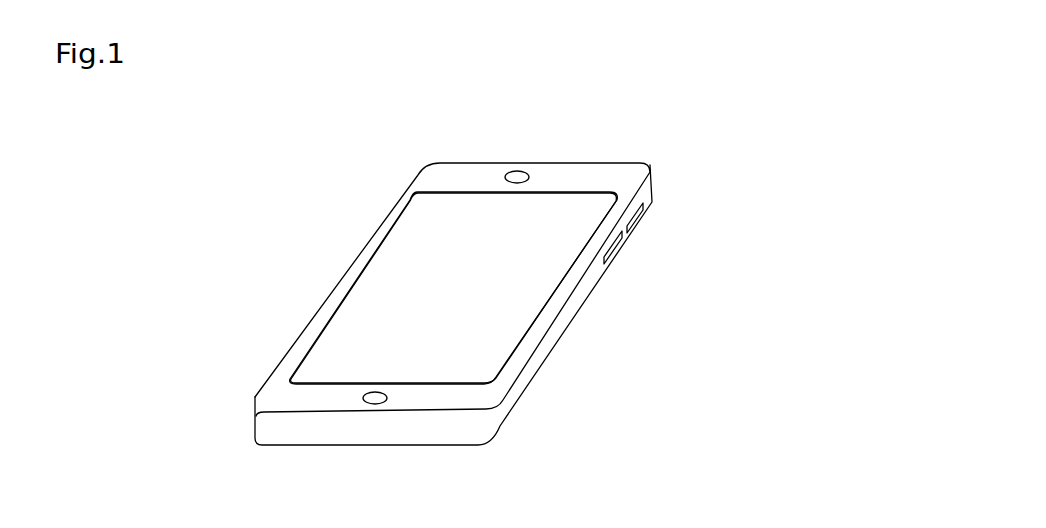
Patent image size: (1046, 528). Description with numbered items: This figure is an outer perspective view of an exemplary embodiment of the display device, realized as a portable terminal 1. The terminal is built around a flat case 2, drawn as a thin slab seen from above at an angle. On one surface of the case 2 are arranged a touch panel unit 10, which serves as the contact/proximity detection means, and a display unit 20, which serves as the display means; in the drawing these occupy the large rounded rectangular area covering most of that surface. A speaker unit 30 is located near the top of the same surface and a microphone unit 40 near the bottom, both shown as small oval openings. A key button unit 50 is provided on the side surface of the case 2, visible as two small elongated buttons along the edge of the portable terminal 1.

The portable terminal 1 is at (668, 137).
The case 2 is at (522, 378).
The touch panel unit 10 is at (353, 317).
The display unit 20 is at (300, 377).
The speaker unit 30 is at (517, 172).
The microphone unit 40 is at (375, 404).
The key button unit 50 is at (636, 222).